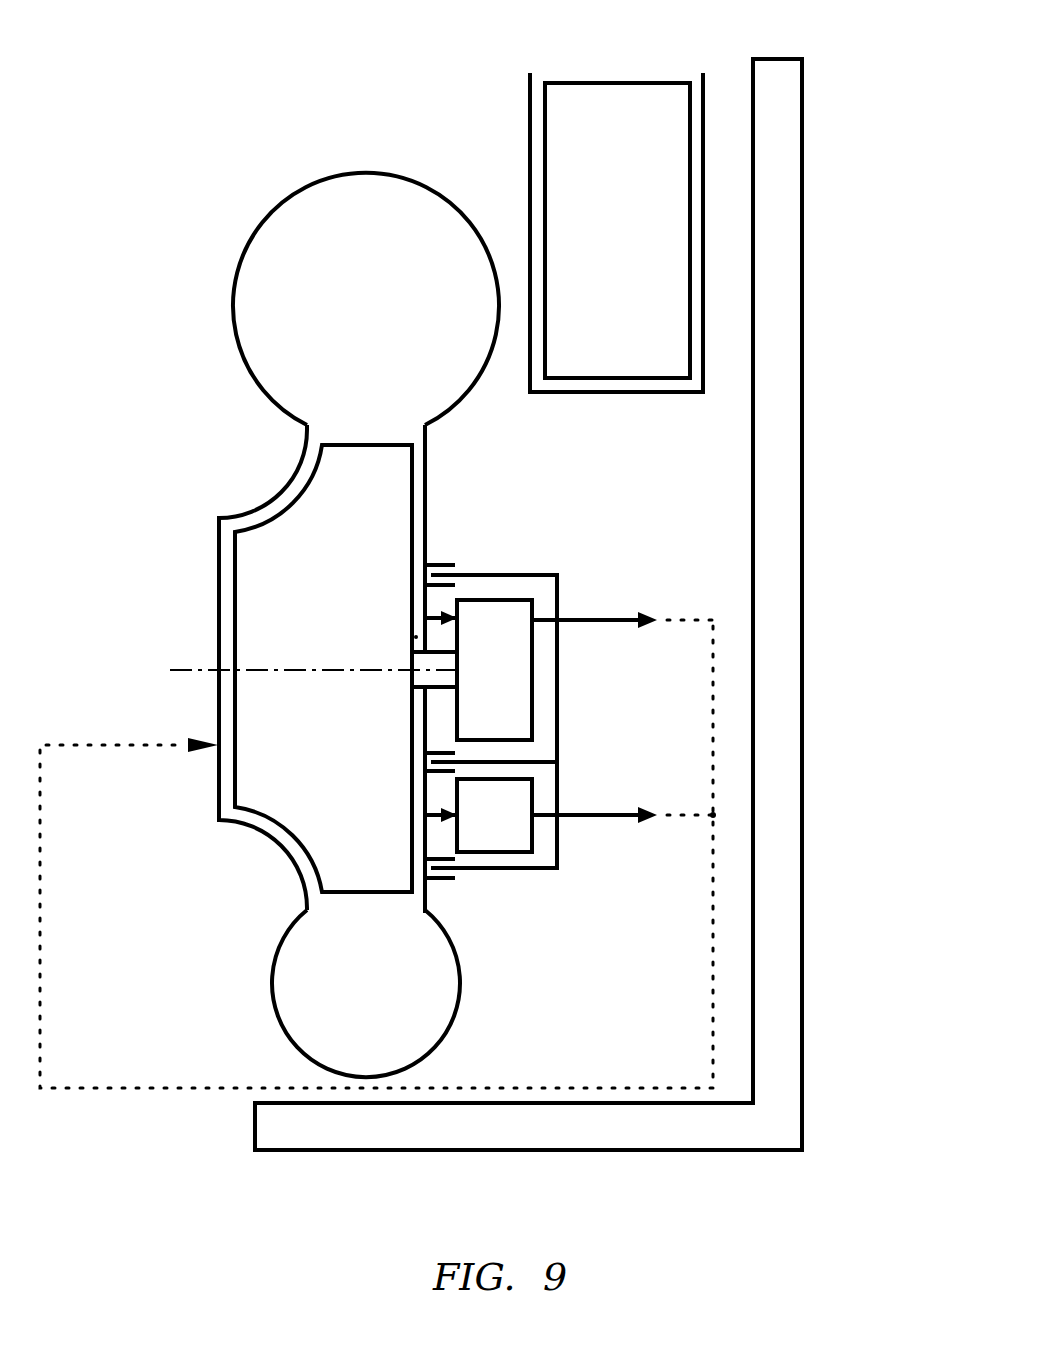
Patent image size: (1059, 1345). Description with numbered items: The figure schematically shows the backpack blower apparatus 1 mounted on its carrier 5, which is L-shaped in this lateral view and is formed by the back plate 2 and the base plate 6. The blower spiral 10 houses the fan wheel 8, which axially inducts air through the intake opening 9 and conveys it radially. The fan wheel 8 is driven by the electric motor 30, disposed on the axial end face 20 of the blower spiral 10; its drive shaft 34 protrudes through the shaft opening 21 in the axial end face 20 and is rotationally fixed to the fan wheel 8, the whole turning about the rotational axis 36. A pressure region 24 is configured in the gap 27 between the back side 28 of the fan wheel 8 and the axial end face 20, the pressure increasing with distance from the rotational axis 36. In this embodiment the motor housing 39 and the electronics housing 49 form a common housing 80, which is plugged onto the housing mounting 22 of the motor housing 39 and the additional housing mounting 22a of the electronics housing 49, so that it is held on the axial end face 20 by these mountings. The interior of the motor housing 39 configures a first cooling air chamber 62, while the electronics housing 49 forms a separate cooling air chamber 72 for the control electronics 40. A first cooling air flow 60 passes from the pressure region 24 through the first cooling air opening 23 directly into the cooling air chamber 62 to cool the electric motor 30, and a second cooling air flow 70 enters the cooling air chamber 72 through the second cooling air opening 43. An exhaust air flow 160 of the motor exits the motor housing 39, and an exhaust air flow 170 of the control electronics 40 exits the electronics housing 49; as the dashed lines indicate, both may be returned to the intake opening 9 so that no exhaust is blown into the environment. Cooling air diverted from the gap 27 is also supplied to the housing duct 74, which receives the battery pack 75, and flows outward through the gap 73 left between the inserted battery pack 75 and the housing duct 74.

The backpack blower apparatus 1 is at (247, 183).
The back plate 2 is at (787, 414).
The carrier 5 is at (816, 1159).
The base plate 6 is at (268, 1128).
The fan wheel 8 is at (284, 768).
The intake opening 9 is at (221, 763).
The blower spiral 10 is at (249, 383).
The axial end face 20 is at (428, 512).
The shaft opening 21 is at (414, 692).
The housing mounting 22 is at (453, 567).
The housing mounting 22a is at (455, 880).
The first cooling air opening 23 is at (415, 637).
The pressure region 24 is at (420, 656).
The gap 27 is at (428, 490).
The back side 28 is at (414, 466).
The electric motor 30 is at (500, 633).
The drive shaft 34 is at (422, 669).
The rotational axis 36 is at (176, 671).
The motor housing 39 is at (559, 583).
The control electronics 40 is at (515, 828).
The second cooling air opening 43 is at (437, 811).
The electronics housing 49 is at (558, 838).
The first cooling air flow 60 is at (430, 615).
The first cooling air chamber 62 is at (546, 691).
The second cooling air flow 70 is at (429, 818).
The cooling air chamber 72 is at (515, 866).
The gap 73 is at (536, 160).
The housing duct 74 is at (528, 194).
The battery pack 75 is at (588, 143).
The common housing 80 is at (558, 720).
The exhaust air flow 160 is at (612, 618).
The exhaust air flow 170 is at (592, 812).